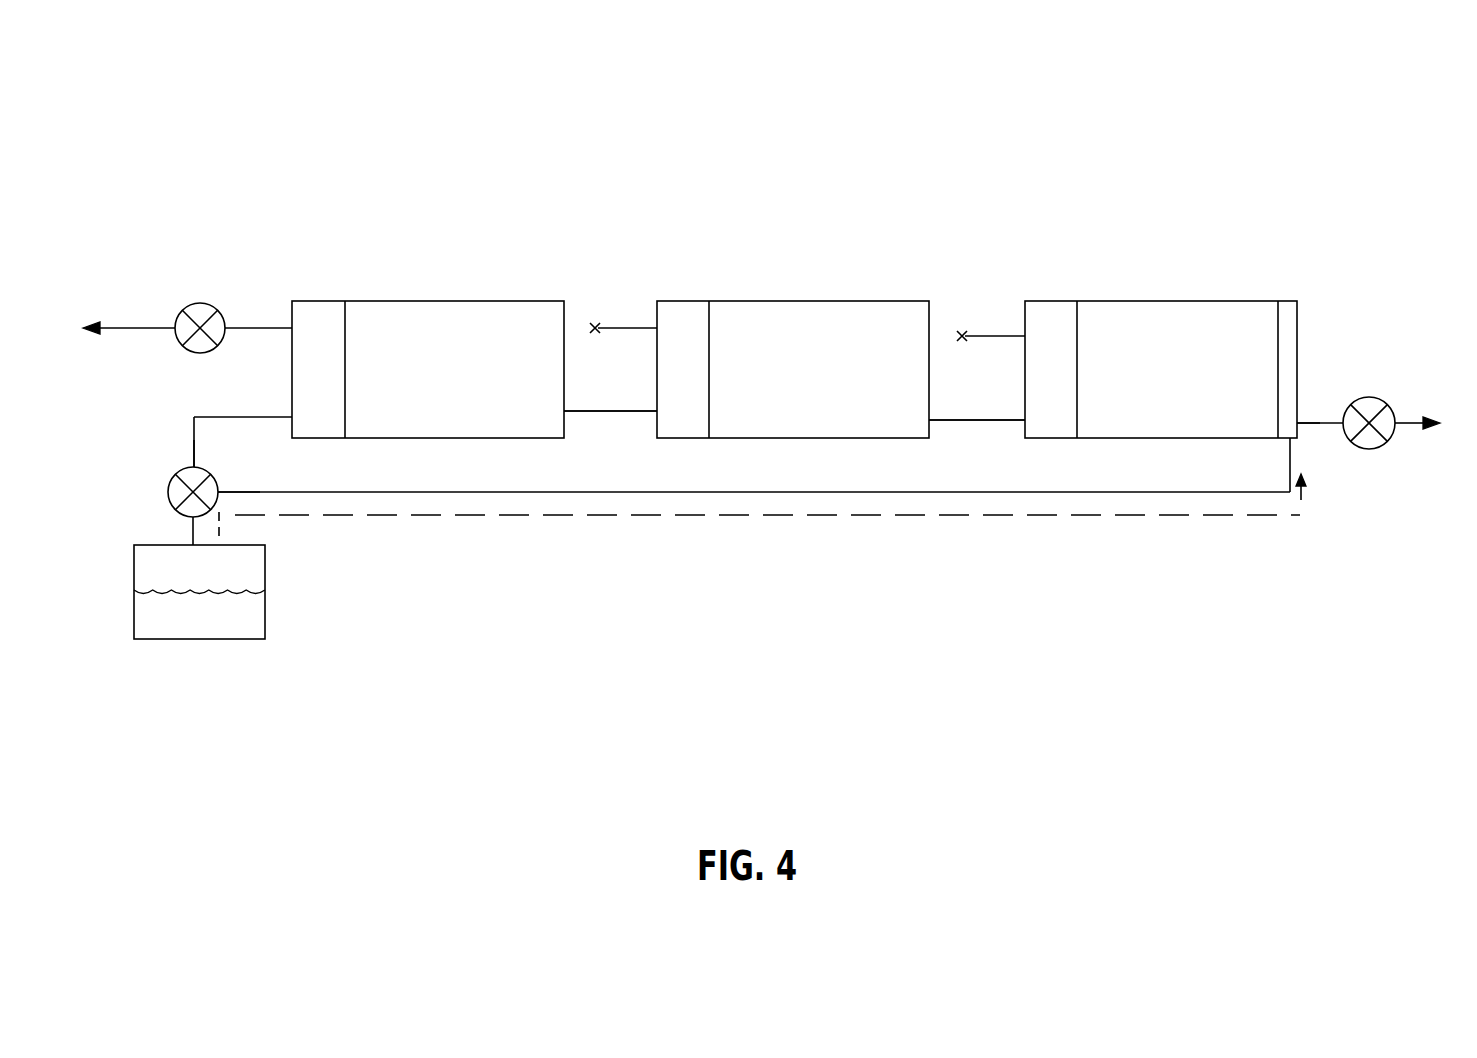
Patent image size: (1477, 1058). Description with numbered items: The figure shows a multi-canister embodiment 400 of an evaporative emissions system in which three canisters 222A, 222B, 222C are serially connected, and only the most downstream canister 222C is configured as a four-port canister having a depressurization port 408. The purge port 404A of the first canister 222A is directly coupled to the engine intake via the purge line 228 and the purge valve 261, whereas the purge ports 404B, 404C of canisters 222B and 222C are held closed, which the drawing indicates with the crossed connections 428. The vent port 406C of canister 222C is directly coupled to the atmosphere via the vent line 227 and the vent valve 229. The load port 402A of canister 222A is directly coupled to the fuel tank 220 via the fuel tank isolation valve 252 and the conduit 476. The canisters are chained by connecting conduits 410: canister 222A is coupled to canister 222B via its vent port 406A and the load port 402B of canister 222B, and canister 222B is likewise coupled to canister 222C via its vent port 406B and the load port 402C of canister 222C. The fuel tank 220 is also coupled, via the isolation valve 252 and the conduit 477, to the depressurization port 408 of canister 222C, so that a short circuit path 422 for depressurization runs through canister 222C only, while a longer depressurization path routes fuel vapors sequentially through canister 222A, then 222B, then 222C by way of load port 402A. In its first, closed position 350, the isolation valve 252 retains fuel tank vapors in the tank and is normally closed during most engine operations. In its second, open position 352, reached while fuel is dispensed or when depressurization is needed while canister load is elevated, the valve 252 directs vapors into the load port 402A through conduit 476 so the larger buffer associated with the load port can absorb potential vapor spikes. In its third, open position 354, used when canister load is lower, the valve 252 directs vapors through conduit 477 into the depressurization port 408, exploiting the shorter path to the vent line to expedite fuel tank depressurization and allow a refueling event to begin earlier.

The multi-canister arrangement embodiment 400 is at (180, 144).
The fuel tank 220 is at (265, 628).
The first canister 222A is at (428, 369).
The second canister 222B is at (793, 369).
The third canister 222C is at (1161, 369).
The vent line 227 is at (1330, 417).
The purge line 228 is at (115, 327).
The vent valve 229 is at (1378, 397).
The fuel tank isolation valve (FTIV) 252 is at (203, 466).
The purge valve 261 is at (208, 302).
The first (closed) position 350 is at (188, 518).
The second (open) position 352 is at (183, 464).
The third (open) position 354 is at (218, 485).
The load port of first canister 402A is at (275, 403).
The load port of second canister 402B is at (649, 388).
The load port of third canister 402C is at (1013, 396).
The purge port of first canister 404A is at (283, 300).
The purge port of second canister 404B is at (648, 302).
The purge port of third canister 404C is at (1015, 308).
The vent port of first canister 406A is at (572, 418).
The vent port of second canister 406B is at (937, 421).
The vent port of third canister 406C is at (1308, 400).
The depressurization port 408 is at (1308, 457).
The connecting conduit between canisters 410 is at (630, 408).
The short circuit path 422 is at (610, 518).
The capped purge port 428 is at (609, 325).
The load conduit 476 is at (194, 419).
The depressurization conduit 477 is at (430, 490).